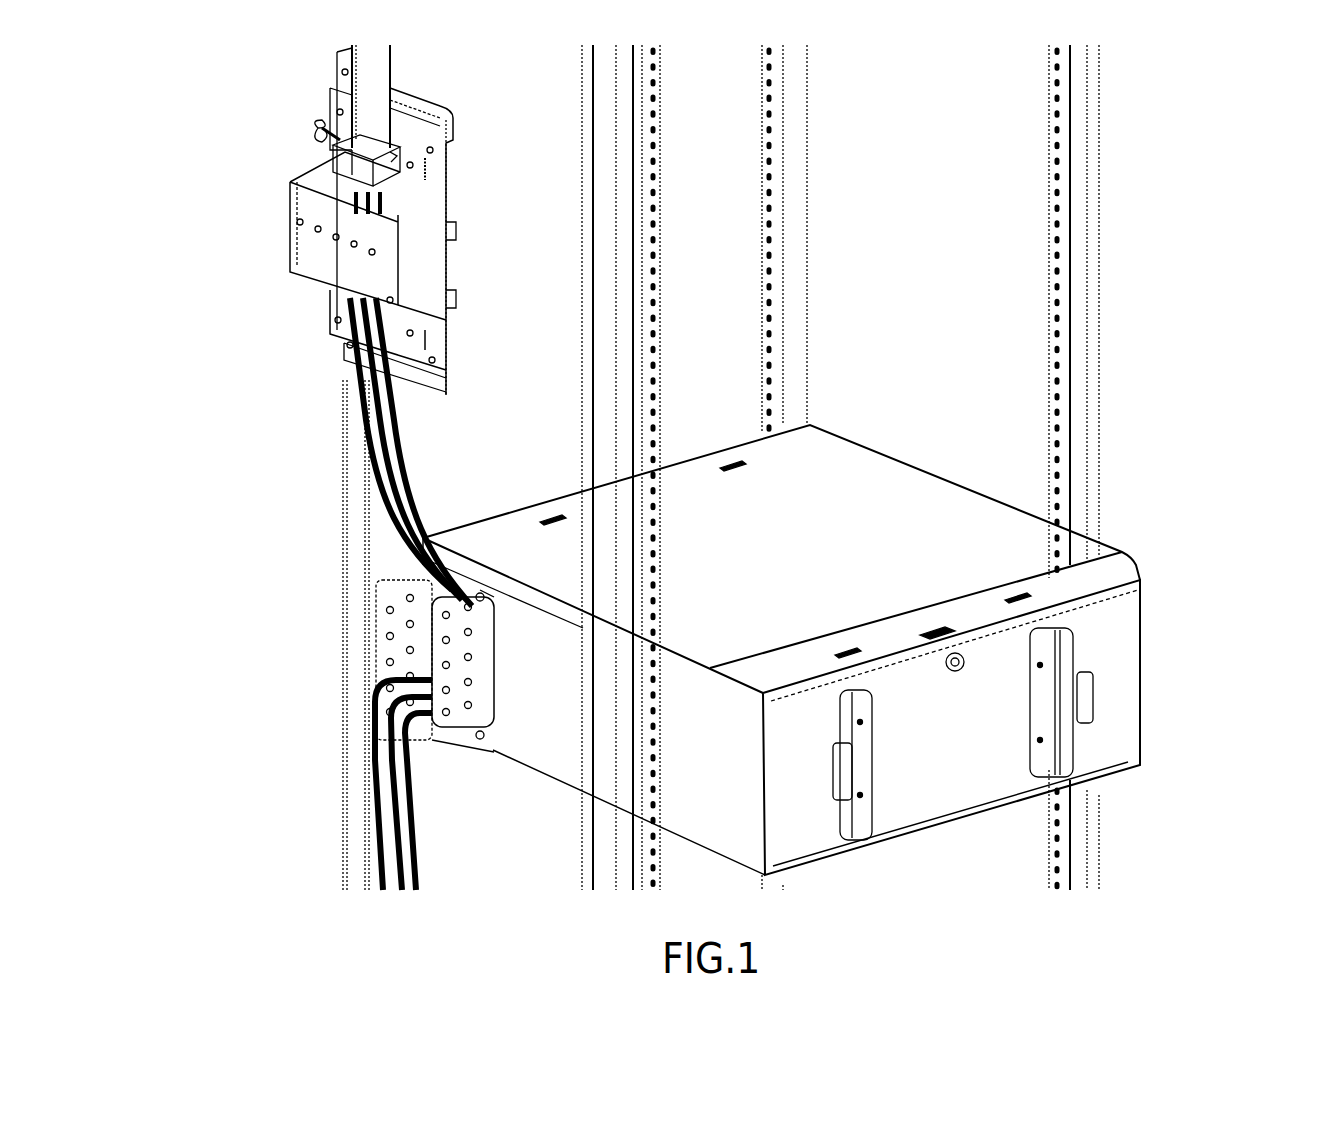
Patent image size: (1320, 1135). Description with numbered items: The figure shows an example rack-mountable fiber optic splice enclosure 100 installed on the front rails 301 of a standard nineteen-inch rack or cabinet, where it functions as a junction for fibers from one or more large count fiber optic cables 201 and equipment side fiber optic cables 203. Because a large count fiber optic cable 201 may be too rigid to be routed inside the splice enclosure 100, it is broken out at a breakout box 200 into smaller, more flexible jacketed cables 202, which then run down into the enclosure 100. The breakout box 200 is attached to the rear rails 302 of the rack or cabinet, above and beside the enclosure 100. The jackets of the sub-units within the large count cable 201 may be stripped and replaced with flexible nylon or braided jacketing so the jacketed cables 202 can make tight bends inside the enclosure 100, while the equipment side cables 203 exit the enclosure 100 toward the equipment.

The fiber optic splice enclosure 100 is at (1100, 578).
The breakout box 200 is at (305, 240).
The large count fiber optic cable 201 is at (370, 75).
The jacketed cables 202 is at (402, 527).
The equipment side fiber optic cables 203 is at (413, 873).
The front rails 301 is at (1085, 405).
The rear rails 302 is at (355, 720).